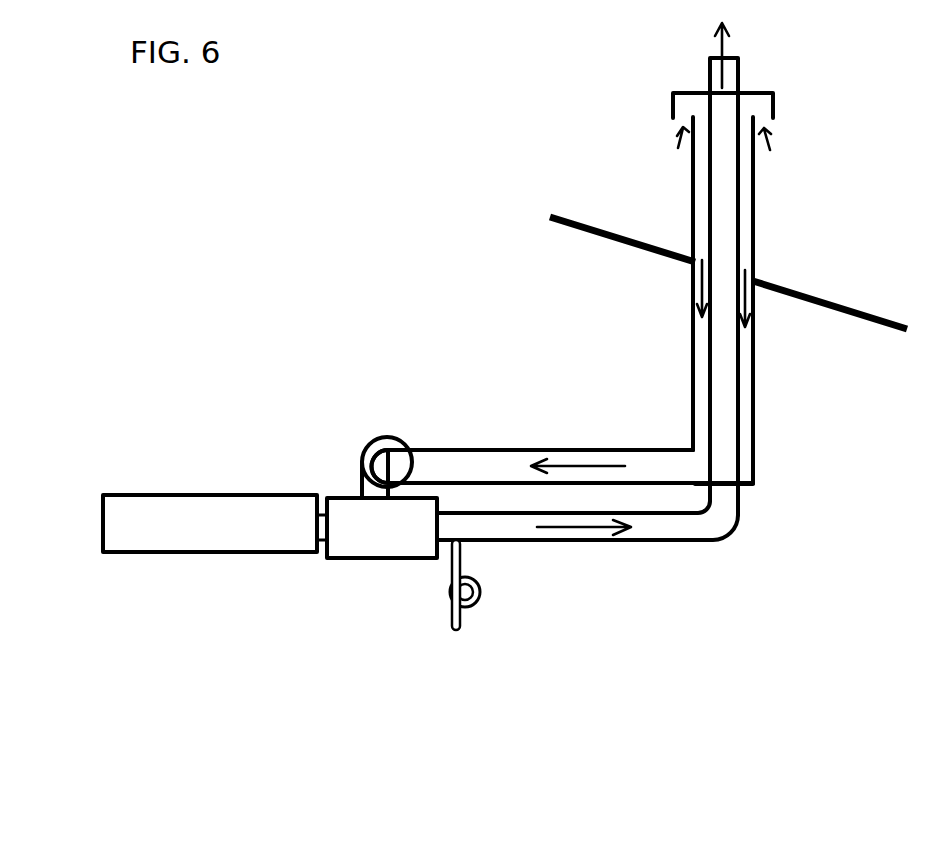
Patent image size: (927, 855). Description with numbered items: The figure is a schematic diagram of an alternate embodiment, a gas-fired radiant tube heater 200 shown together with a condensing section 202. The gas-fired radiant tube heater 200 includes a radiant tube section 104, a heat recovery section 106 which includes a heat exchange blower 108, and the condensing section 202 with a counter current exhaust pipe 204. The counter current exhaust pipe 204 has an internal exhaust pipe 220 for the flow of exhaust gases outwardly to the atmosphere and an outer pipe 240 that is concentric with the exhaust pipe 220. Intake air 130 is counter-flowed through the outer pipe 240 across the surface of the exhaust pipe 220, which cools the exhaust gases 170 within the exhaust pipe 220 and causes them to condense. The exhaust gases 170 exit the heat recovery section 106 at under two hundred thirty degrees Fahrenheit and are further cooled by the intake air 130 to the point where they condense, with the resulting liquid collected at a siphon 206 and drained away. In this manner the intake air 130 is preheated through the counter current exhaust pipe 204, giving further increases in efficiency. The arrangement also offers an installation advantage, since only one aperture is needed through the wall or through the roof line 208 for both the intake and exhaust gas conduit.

The radiant tube section 104 is at (153, 518).
The heat recovery section 106 is at (372, 556).
The heat exchange blower 108 is at (382, 436).
The intake air 130 is at (562, 455).
The exhaust gases 170 is at (722, 43).
The gas-fired radiant tube heater 200 is at (166, 606).
The condensing section 202 is at (486, 168).
The counter current exhaust pipe 204 is at (753, 242).
The siphon 206 is at (478, 601).
The roof line 208 is at (580, 223).
The internal exhaust pipe 220 is at (732, 383).
The outer pipe 240 is at (753, 470).